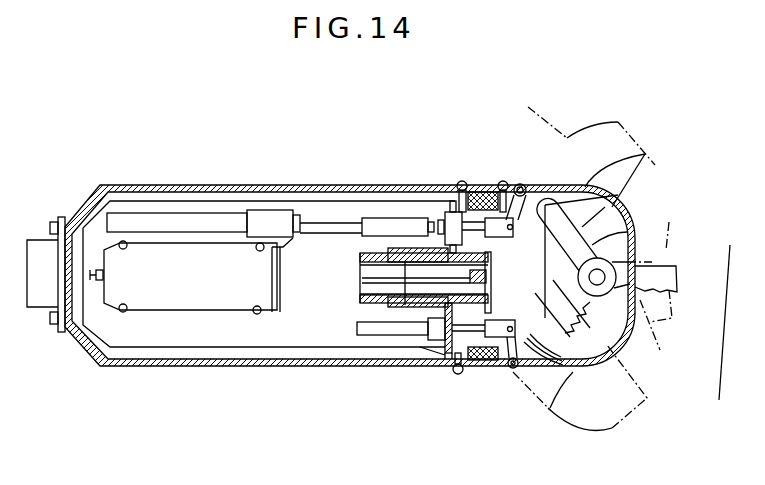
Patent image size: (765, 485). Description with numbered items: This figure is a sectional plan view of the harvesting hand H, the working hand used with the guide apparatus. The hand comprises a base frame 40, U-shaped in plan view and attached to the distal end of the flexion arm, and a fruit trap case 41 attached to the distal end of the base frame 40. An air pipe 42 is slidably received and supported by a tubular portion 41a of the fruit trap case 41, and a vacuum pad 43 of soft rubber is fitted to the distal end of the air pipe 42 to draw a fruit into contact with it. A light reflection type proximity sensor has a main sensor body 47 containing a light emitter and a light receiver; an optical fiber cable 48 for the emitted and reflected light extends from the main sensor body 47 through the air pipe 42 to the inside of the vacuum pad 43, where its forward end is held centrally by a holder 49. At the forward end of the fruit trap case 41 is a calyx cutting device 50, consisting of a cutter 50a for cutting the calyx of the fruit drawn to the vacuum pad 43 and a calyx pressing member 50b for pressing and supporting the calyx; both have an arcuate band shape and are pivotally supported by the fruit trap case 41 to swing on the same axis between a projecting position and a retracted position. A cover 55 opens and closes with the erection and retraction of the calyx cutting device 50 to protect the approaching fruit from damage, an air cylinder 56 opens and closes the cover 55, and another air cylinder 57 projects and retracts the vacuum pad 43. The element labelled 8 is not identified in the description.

The plug connector 8 is at (42, 300).
The base frame 40 is at (246, 188).
The fruit trap case 41 is at (645, 154).
The tubular portion 41a is at (408, 307).
The air pipe 42 is at (308, 293).
The vacuum pad 43 is at (603, 343).
The main sensor body 47 is at (188, 312).
The optical fiber cable 48 is at (405, 275).
The holder 49 is at (470, 368).
The calyx cutting device 50 is at (696, 311).
The cutter 50a is at (630, 338).
The calyx pressing member 50b is at (637, 230).
The cover 55 is at (553, 187).
The air cylinder 56 is at (380, 217).
The air cylinder 57 is at (190, 220).
The harvesting hand H is at (581, 109).